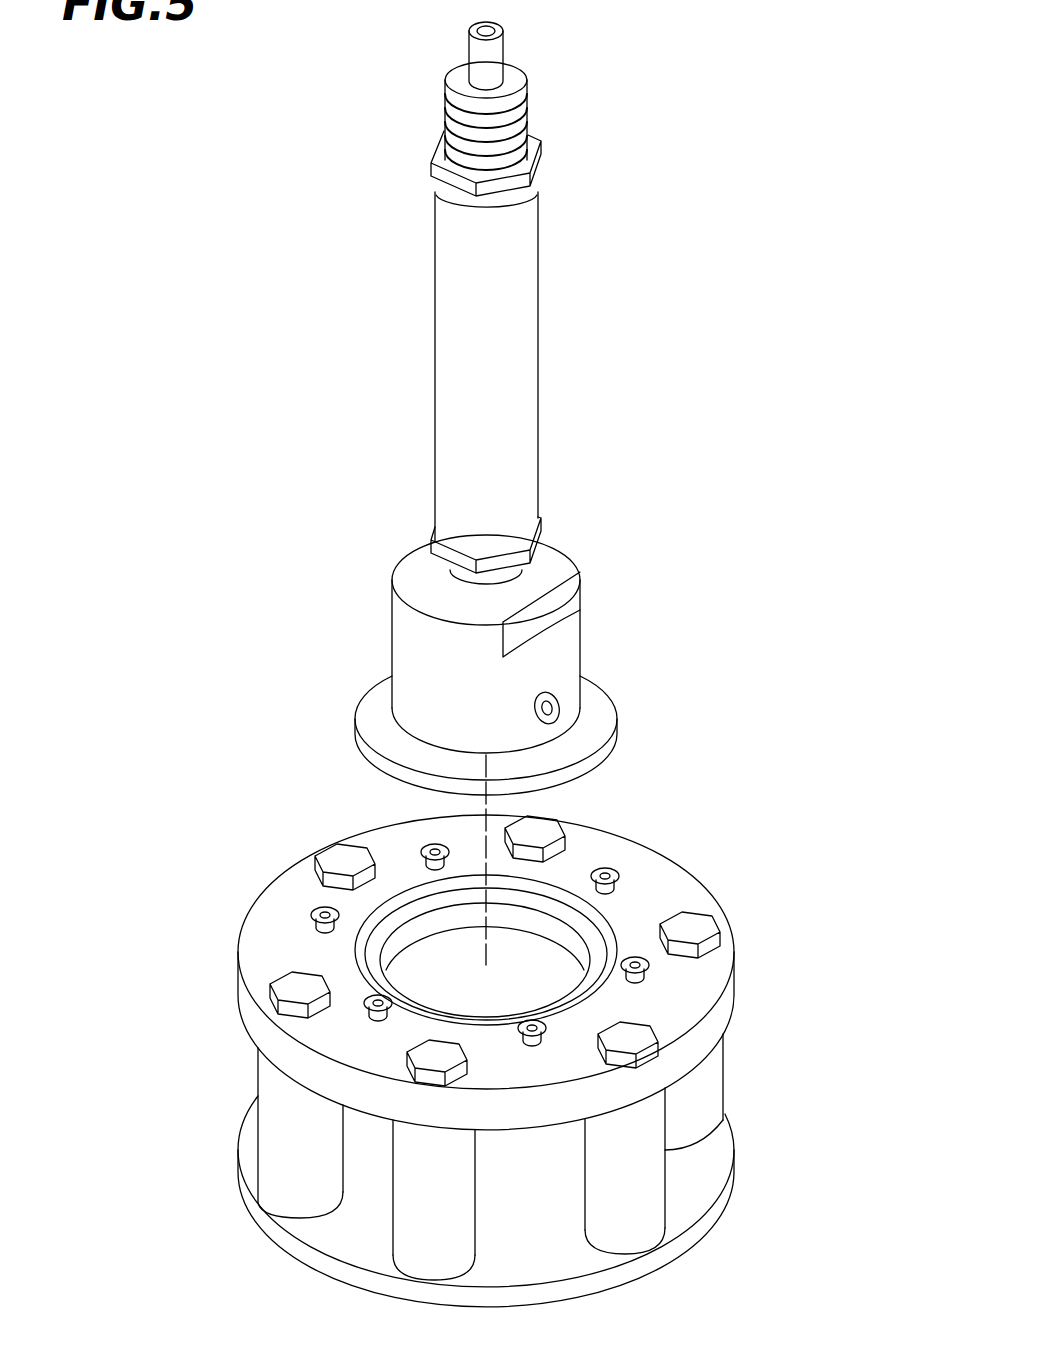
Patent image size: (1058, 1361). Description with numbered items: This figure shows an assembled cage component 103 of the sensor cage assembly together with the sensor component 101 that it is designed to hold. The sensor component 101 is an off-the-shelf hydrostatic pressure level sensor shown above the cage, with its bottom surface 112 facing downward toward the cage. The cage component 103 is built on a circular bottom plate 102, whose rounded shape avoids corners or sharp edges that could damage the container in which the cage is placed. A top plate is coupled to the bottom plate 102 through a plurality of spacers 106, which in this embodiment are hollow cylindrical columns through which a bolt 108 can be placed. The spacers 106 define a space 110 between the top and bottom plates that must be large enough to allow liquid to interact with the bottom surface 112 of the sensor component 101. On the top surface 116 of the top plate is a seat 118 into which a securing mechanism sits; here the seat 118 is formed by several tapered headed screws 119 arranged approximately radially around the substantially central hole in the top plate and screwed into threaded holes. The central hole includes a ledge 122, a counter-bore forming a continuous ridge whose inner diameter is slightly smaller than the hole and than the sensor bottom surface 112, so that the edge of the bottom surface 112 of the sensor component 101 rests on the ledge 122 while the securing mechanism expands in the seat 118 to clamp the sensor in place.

The sensor component 101 is at (541, 307).
The bottom surface of sensor 112 is at (365, 762).
The cage component 103 is at (636, 804).
The top surface of top plate 116 is at (673, 890).
The seat 118 is at (686, 981).
The ledge 122 is at (407, 897).
The bolt 108 is at (256, 944).
The tapered headed screws 119 is at (618, 876).
The spacers 106 is at (706, 1083).
The space 110 is at (548, 1197).
The bottom plate 102 is at (705, 1233).